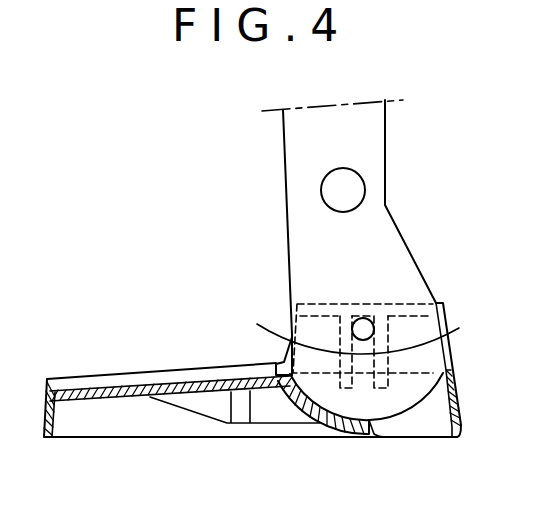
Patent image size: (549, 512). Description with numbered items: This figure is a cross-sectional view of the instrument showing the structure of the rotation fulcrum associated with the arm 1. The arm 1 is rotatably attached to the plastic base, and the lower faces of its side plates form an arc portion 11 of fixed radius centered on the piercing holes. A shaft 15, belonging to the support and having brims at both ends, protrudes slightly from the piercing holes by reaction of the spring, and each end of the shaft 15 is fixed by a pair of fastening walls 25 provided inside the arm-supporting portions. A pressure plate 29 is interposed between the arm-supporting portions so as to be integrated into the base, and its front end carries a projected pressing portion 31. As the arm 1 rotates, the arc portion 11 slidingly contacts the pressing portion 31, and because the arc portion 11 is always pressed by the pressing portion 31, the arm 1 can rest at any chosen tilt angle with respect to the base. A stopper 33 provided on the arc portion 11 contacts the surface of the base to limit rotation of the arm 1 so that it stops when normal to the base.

The arm 1 is at (388, 163).
The arc portion 11 is at (410, 400).
The shaft 15 is at (364, 318).
The fastening walls 25 is at (257, 324).
The pressure plate 29 is at (318, 423).
The pressing portion 31 is at (368, 425).
The stopper 33 is at (274, 366).